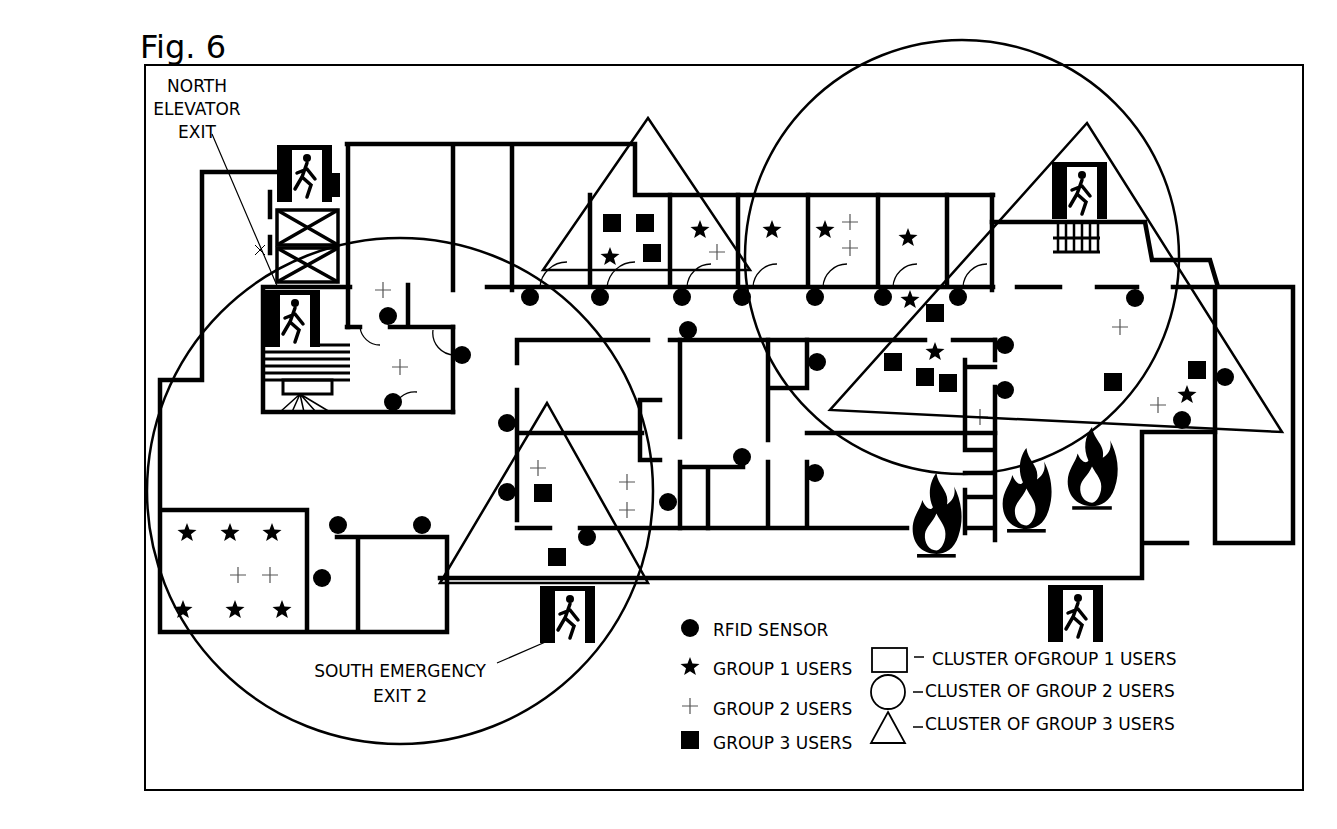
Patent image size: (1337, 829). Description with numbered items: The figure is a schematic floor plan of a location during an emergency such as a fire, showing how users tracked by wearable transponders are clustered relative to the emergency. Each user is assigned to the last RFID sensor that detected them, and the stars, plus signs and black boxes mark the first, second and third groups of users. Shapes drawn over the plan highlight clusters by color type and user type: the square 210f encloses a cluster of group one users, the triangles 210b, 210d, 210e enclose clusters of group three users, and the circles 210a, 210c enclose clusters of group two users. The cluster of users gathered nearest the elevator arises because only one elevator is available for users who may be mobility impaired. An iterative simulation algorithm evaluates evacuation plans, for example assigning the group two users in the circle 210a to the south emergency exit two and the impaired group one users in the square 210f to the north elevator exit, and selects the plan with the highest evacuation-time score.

The circle 210a is at (418, 235).
The triangle 210b is at (673, 150).
The circle 210c is at (1040, 55).
The triangle 210d is at (1213, 287).
The triangle 210e is at (470, 527).
The square 210f is at (558, 65).